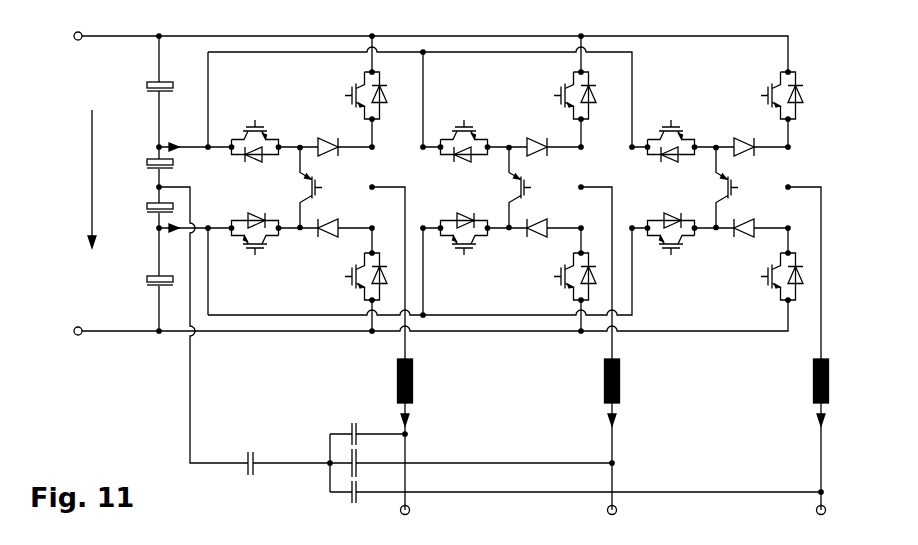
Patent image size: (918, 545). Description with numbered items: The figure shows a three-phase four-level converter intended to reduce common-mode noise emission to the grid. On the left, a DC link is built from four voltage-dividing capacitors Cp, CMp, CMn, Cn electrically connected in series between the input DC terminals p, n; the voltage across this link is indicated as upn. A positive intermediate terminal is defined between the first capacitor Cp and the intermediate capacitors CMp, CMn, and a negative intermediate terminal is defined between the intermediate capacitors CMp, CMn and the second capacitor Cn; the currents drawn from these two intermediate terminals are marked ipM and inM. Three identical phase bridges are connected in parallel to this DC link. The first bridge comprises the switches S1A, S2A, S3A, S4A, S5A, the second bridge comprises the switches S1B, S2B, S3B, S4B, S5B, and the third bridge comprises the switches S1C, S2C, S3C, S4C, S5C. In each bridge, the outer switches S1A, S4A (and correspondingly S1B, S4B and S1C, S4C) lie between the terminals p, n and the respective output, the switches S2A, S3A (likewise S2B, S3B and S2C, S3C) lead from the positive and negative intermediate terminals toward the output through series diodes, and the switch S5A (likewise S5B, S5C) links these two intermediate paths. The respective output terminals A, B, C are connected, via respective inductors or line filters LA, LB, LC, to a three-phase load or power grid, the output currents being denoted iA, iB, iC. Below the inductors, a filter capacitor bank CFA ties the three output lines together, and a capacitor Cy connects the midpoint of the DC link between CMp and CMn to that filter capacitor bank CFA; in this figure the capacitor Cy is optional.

The input DC terminal p is at (423, 48).
The input DC terminal n is at (423, 320).
The first capacitor Cp is at (149, 87).
The intermediate capacitor CMp is at (143, 164).
The intermediate capacitor CMn is at (143, 209).
The second capacitor Cn is at (149, 284).
The DC-link voltage upn is at (73, 179).
The upper midpoint current ipM is at (183, 136).
The lower midpoint current inM is at (183, 238).
The upper switch phase A S1A is at (354, 91).
The upper midpoint switch phase A S2A is at (254, 128).
The lower midpoint switch phase A S3A is at (254, 245).
The lower switch phase A S4A is at (354, 279).
The clamping switch phase A S5A is at (324, 187).
The upper switch phase B S1B is at (563, 91).
The upper midpoint switch phase B S2B is at (466, 128).
The lower midpoint switch phase B S3B is at (466, 245).
The lower switch phase B S4B is at (563, 279).
The clamping switch phase B S5B is at (533, 187).
The upper switch phase C S1C is at (770, 108).
The upper midpoint switch phase C S2C is at (674, 128).
The lower midpoint switch phase C S3C is at (674, 245).
The lower switch phase C S4C is at (770, 265).
The clamping switch phase C S5C is at (741, 187).
The output terminal A is at (387, 261).
The output terminal B is at (595, 261).
The output terminal C is at (803, 261).
The inductor or line filter LA is at (416, 434).
The inductor or line filter LB is at (623, 434).
The inductor or line filter LC is at (832, 434).
The phase A output current iA is at (413, 461).
The phase B output current iB is at (620, 461).
The phase C output current iC is at (829, 461).
The capacitor Cy is at (244, 331).
The filter capacitor bank CFA is at (575, 452).